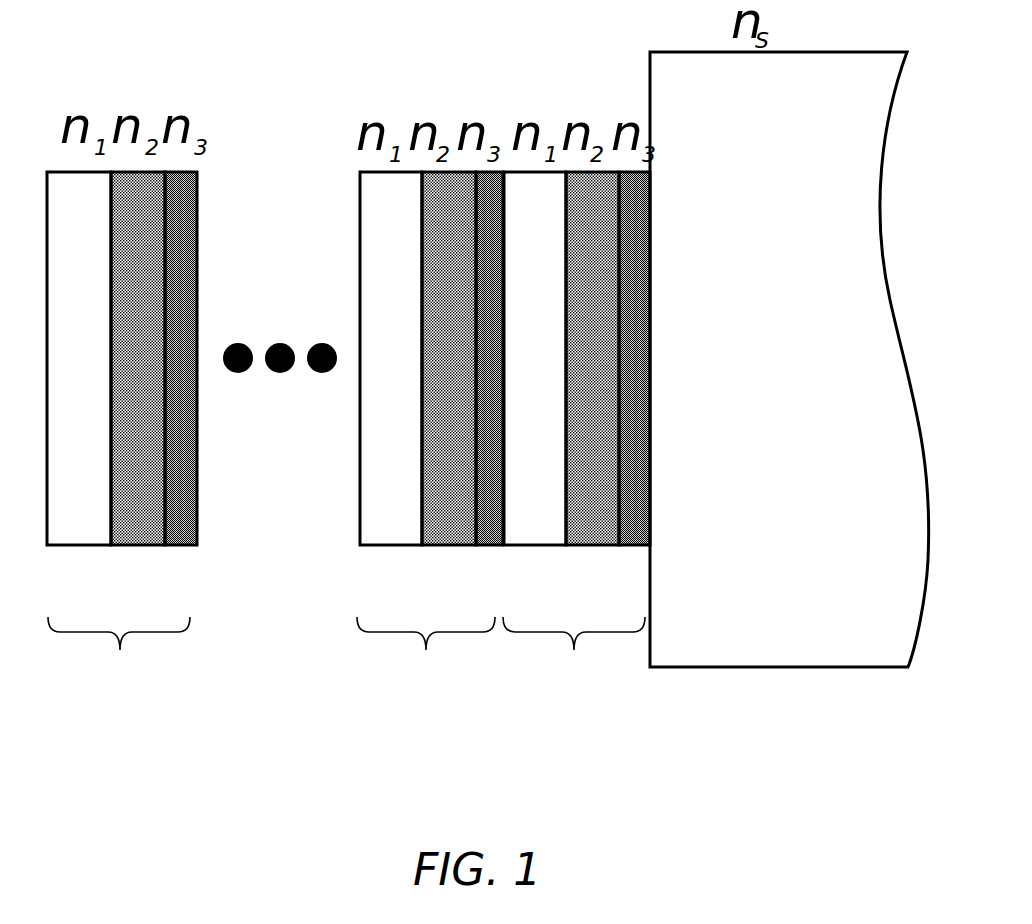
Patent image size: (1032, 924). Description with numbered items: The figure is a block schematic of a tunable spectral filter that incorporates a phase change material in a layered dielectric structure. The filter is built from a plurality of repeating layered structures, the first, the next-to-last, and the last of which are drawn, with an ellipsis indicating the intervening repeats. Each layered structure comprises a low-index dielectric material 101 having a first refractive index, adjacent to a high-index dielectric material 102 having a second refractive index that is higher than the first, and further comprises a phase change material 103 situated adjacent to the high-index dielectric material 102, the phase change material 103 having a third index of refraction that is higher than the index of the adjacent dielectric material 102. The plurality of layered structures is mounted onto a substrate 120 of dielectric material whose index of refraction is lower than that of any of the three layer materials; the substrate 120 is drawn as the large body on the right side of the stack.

The low-index dielectric material 101 is at (68, 558).
The high-index dielectric material 102 is at (132, 558).
The phase change material 103 is at (175, 558).
The substrate 120 is at (746, 683).